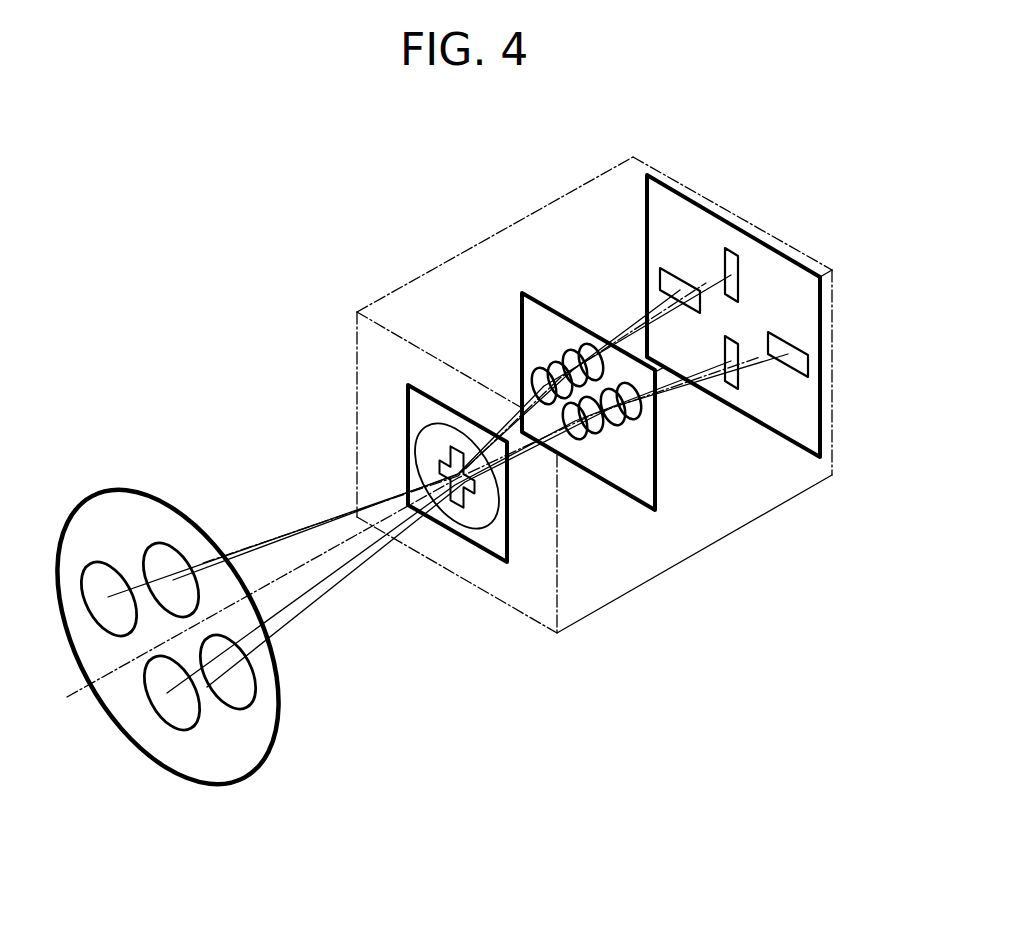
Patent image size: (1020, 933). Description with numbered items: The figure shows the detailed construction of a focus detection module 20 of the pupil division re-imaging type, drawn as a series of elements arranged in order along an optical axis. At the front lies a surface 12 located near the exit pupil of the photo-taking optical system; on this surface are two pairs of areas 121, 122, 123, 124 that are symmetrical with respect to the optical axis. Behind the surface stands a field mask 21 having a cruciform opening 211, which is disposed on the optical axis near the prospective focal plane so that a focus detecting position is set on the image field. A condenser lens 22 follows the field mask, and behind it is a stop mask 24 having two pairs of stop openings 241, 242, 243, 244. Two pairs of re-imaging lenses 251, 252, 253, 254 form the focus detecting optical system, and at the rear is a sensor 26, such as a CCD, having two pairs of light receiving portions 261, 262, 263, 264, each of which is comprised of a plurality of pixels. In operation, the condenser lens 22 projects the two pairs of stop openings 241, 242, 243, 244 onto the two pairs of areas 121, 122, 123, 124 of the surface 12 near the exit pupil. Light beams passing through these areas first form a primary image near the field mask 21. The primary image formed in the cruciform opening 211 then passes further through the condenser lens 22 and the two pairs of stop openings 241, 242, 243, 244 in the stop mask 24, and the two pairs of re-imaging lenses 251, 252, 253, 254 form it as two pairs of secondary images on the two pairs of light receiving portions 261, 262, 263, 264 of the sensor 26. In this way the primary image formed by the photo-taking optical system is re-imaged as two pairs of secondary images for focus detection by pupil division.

The surface 12 is at (177, 637).
The area 121 is at (252, 688).
The area 122 is at (107, 566).
The area 123 is at (180, 727).
The area 124 is at (170, 553).
The focus detection module 20 is at (828, 480).
The field mask 21 is at (417, 518).
The cruciform opening 211 is at (456, 500).
The condenser lens 22 is at (425, 443).
The stop mask 24 is at (585, 409).
The stop opening 241 is at (512, 332).
The stop opening 242 is at (659, 433).
The stop opening 243 is at (589, 330).
The stop opening 244 is at (615, 477).
The re-imaging lens 251 is at (552, 366).
The re-imaging lens 252 is at (640, 407).
The re-imaging lens 253 is at (593, 346).
The re-imaging lens 254 is at (597, 434).
The sensor 26 is at (732, 315).
The light receiving portion 261 is at (665, 283).
The light receiving portion 262 is at (807, 366).
The light receiving portion 263 is at (730, 250).
The light receiving portion 264 is at (737, 387).